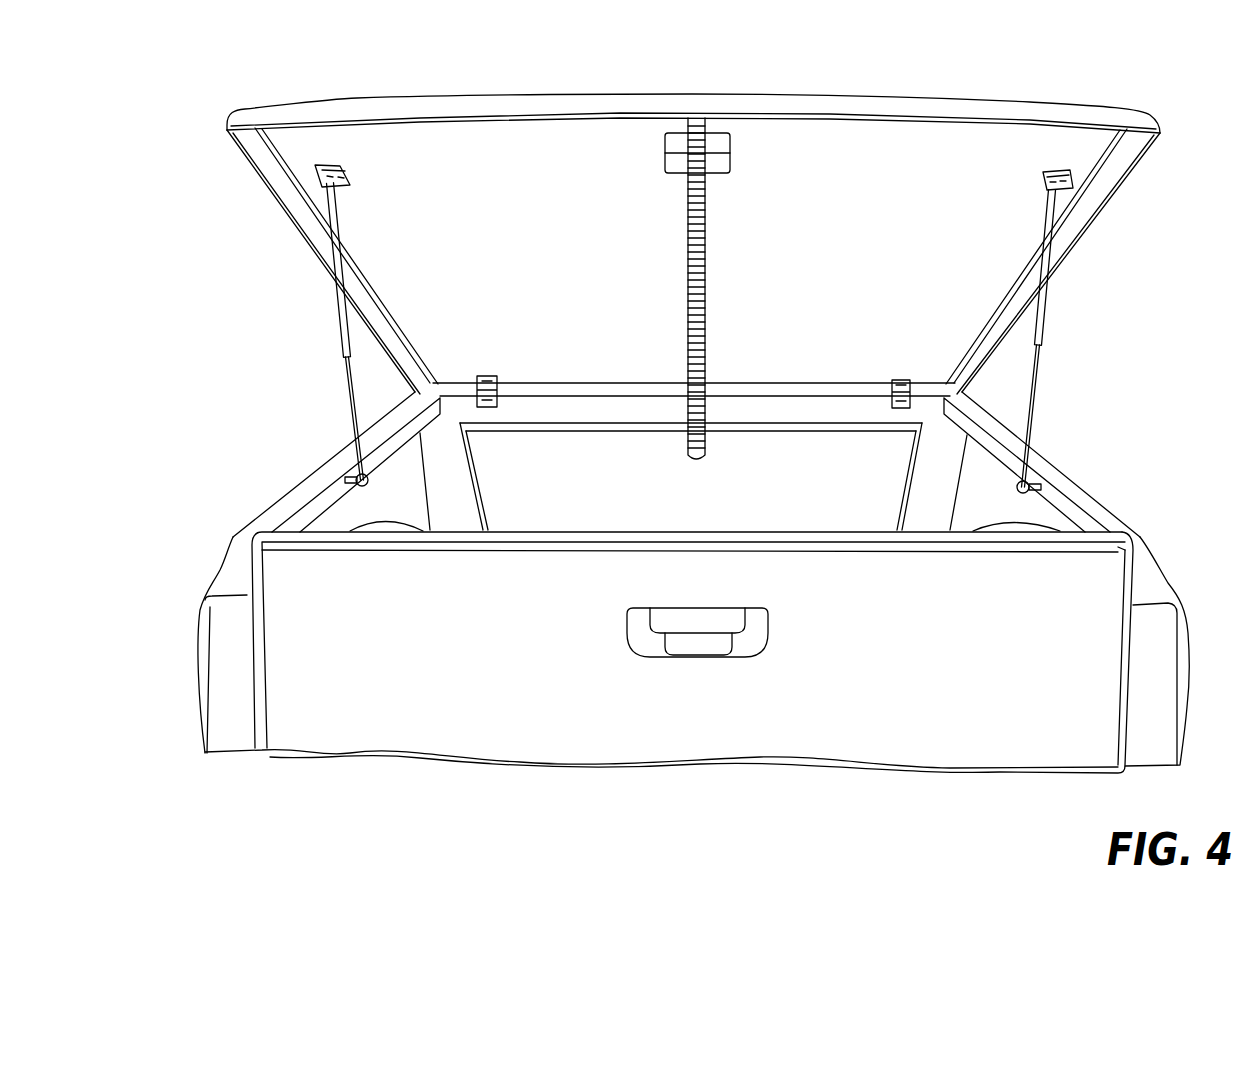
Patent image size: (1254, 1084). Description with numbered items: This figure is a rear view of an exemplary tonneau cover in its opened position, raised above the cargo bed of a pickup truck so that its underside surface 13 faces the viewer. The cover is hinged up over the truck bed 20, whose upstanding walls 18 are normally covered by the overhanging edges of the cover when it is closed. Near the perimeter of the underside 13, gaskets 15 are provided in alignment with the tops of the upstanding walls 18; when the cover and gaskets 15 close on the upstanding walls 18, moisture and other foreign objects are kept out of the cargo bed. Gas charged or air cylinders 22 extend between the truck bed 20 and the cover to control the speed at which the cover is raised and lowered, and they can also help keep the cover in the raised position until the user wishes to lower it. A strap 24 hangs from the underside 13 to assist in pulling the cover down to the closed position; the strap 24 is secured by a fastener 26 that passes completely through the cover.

The underside surface 13 is at (930, 152).
The gaskets 15 is at (307, 200).
The upstanding walls 18 is at (1080, 495).
The truck bed 20 is at (353, 470).
The gas charged or air cylinders 22 is at (340, 343).
The strap 24 is at (700, 207).
The fastener 26 is at (660, 118).